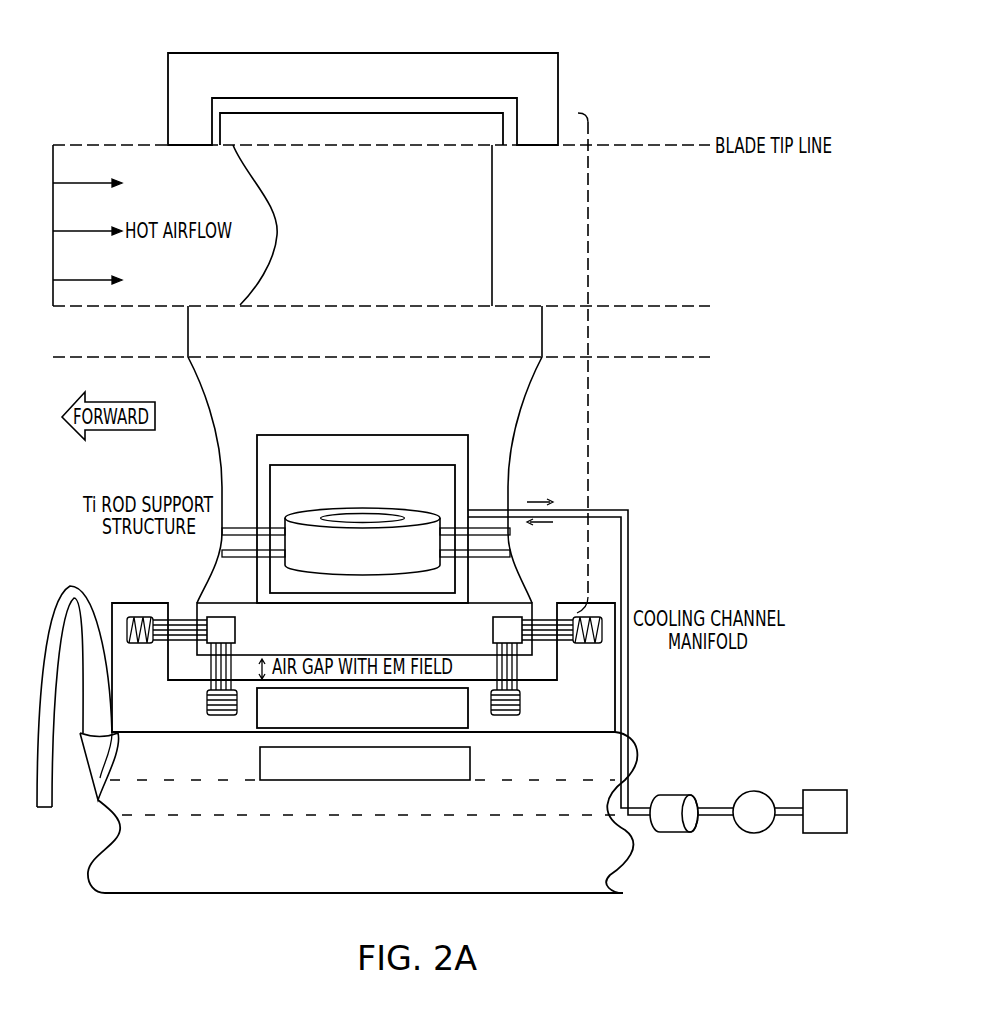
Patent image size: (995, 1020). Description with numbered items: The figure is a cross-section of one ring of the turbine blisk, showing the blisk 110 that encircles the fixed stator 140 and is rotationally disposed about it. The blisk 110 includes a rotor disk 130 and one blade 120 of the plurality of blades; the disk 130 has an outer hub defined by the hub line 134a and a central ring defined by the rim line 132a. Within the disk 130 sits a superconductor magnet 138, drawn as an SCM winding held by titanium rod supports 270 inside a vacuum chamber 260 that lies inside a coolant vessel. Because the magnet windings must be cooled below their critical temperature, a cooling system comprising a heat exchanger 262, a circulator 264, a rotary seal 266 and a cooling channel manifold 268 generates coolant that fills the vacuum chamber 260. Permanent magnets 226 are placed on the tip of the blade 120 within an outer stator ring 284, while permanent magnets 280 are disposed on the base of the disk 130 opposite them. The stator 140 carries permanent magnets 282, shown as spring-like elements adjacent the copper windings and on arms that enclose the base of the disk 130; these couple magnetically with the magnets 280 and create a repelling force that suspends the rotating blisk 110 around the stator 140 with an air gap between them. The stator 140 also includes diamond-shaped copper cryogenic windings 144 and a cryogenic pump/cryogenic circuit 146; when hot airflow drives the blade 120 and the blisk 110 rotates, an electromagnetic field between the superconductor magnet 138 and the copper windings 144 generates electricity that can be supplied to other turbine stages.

The blisk 110 is at (601, 333).
The rotor blade 120 is at (470, 210).
The rotor disk 130 is at (513, 320).
The rim line 132a is at (673, 358).
The hub line 134a is at (657, 305).
The superconductor magnet 138 is at (290, 510).
The stator 140 is at (160, 758).
The copper cryogenic winding 144 is at (285, 767).
The cryogenic pump/cryogenic circuit 146 is at (385, 717).
The permanent magnets 226 is at (460, 112).
The vacuum chamber 260 is at (468, 482).
The heat exchanger 262 is at (823, 833).
The circulator 264 is at (752, 832).
The rotary seal 266 is at (670, 832).
The cooling channel manifold 268 is at (630, 549).
The titanium rod support structure 270 is at (222, 552).
The permanent magnets 280 is at (235, 630).
The permanent magnets 282 is at (132, 617).
The outer stator ring 284 is at (383, 53).